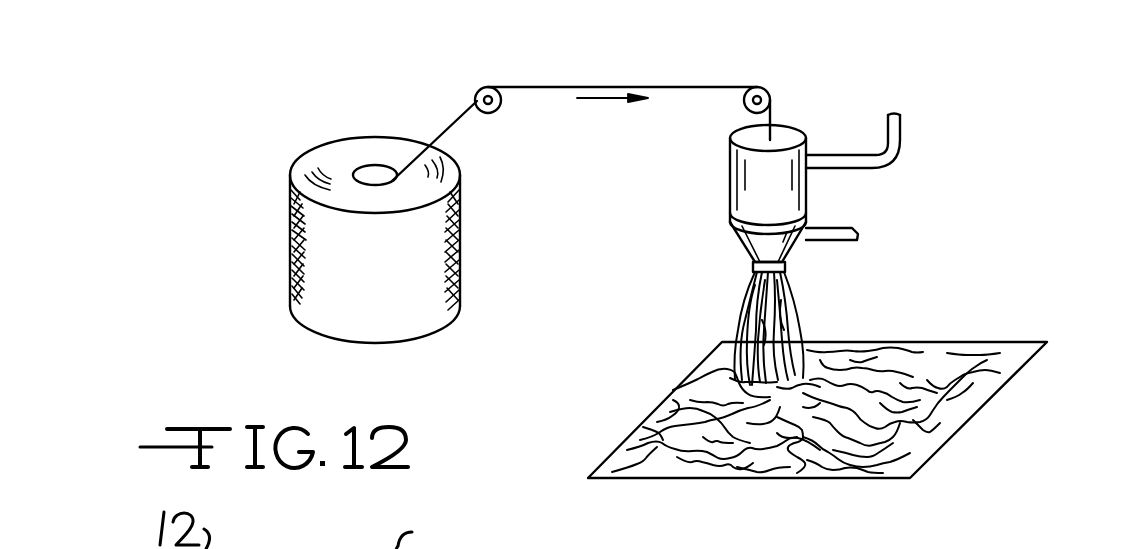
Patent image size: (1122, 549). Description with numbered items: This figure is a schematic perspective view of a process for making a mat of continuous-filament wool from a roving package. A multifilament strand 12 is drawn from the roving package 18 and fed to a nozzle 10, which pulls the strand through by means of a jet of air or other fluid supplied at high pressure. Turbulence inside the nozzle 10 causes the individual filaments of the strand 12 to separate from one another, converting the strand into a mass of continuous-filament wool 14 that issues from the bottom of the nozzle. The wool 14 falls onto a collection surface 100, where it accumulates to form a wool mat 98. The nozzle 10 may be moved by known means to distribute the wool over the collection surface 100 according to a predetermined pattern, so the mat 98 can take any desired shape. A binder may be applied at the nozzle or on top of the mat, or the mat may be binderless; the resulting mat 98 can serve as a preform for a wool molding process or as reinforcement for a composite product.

The nozzle 10 is at (621, 170).
The strand 12 is at (619, 51).
The continuous-filament wool 14 is at (678, 291).
The roving package 18 is at (184, 260).
The mat of continuous-filament wool 98 is at (1031, 292).
The collection surface 100 is at (1018, 417).